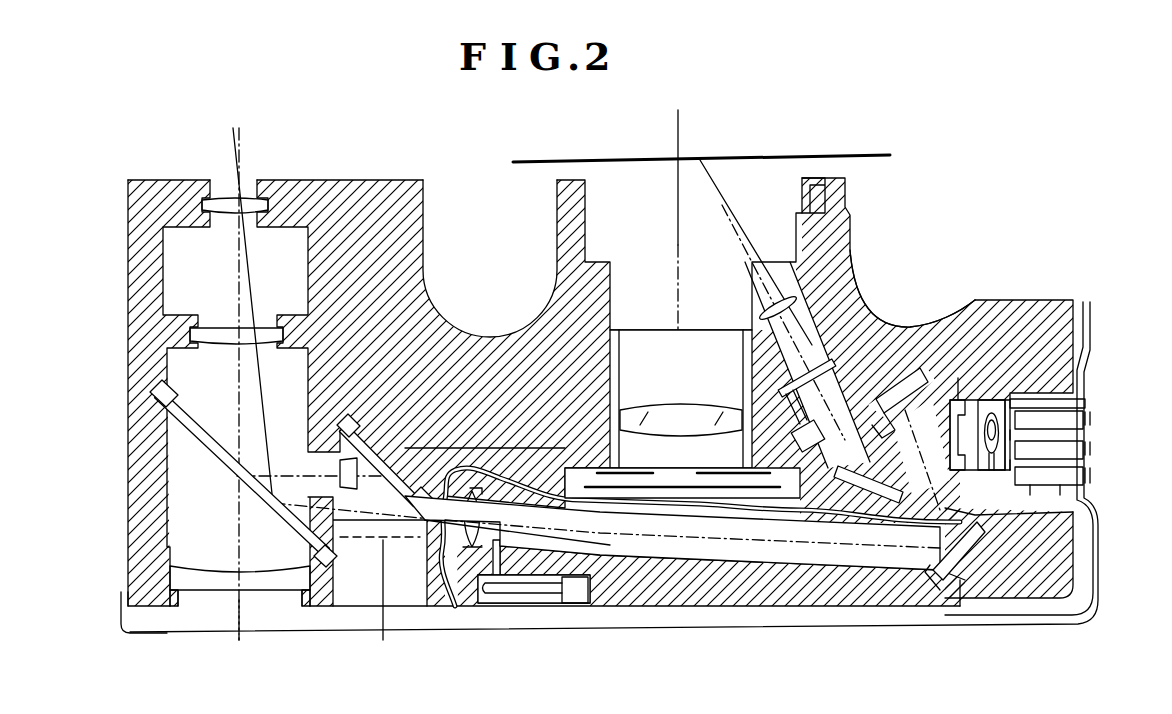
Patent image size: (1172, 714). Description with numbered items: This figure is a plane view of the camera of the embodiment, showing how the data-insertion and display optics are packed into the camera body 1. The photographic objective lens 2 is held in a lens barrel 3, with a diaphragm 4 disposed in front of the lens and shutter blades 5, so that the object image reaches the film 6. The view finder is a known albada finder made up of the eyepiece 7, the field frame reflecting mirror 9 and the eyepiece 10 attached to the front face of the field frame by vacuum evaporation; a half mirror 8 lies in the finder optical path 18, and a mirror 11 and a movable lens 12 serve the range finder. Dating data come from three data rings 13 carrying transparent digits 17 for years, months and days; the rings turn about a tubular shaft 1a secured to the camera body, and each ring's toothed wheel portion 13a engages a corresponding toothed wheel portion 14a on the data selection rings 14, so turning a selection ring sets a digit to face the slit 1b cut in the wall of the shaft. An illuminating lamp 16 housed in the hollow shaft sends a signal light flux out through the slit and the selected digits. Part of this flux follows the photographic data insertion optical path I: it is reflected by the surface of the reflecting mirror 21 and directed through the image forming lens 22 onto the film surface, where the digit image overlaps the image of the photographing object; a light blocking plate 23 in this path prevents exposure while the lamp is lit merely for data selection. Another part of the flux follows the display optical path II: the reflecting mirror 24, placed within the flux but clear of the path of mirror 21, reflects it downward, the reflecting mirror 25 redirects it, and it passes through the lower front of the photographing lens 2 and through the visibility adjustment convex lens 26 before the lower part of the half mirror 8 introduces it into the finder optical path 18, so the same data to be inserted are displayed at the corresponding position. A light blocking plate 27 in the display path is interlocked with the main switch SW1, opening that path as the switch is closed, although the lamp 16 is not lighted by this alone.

The camera body 1 is at (1025, 308).
The tubular shaft 1a is at (1015, 505).
The slit 1b is at (985, 508).
The photographic objective lens 2 is at (650, 418).
The lens barrel 3 is at (618, 372).
The diaphragm 4 is at (745, 478).
The shutter blades 5 is at (700, 488).
The film 6 is at (575, 160).
The eyepiece 7 is at (203, 580).
The half mirror 8 is at (207, 452).
The field frame reflecting mirror 9 is at (210, 345).
The eyepiece 10 is at (226, 206).
The mirror for range finder 11 is at (360, 437).
The movable lens for range finder 12 is at (340, 468).
The data rings 13 is at (992, 412).
The toothed wheel portion 13a is at (965, 400).
The data selection rings 14 is at (1087, 437).
The toothed wheel portion 14a is at (1087, 405).
The illuminating lamp 16 is at (1010, 402).
The transparent digits 17 is at (942, 390).
The optical path of the finder 18 is at (241, 641).
The reflecting mirror 21 is at (860, 522).
The image forming lens 22 is at (775, 300).
The light blocking plate 23 is at (822, 360).
The reflecting mirror 24 is at (905, 370).
The reflecting mirror 25 is at (955, 548).
The visibility adjustment convex lens 26 is at (455, 548).
The light blocking plate 27 is at (480, 578).
The main switch SW1 is at (525, 592).
The optical path for photographic data insertion I is at (868, 358).
The display optical path II is at (642, 530).